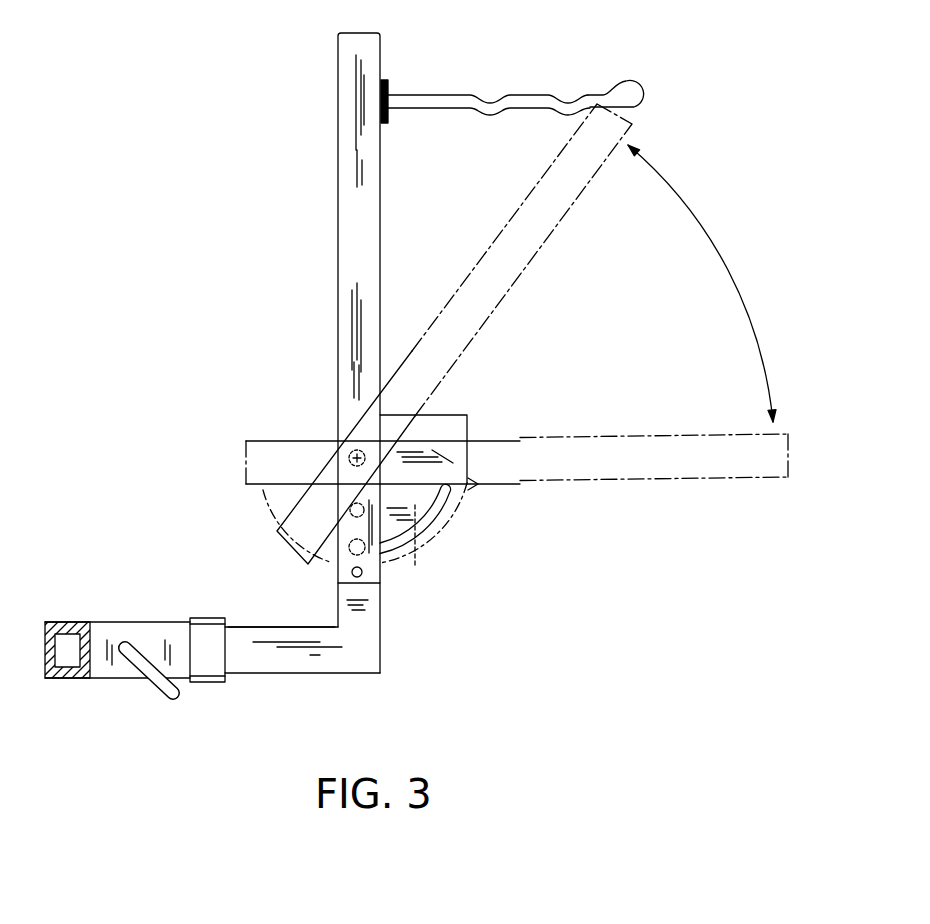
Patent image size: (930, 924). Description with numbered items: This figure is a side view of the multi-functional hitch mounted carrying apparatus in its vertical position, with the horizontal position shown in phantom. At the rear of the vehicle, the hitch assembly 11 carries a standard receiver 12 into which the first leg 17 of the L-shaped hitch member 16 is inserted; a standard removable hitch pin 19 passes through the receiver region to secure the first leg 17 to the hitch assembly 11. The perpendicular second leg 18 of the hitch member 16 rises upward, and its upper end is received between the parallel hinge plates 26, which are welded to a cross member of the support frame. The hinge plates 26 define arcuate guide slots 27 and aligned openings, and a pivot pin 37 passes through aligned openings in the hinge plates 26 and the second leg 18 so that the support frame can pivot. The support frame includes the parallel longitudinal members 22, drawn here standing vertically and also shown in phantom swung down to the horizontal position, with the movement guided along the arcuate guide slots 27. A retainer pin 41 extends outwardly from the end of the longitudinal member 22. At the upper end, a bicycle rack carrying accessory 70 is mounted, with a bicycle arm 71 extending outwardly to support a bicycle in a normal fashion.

The hitch assembly 11 is at (62, 678).
The standard receiver 12 is at (212, 685).
The hitch member 16 is at (317, 680).
The first leg 17 is at (240, 627).
The second leg 18 is at (381, 615).
The hitch pin 19 is at (148, 690).
The longitudinal members 22 is at (338, 222).
The hinge plates 26 is at (469, 418).
The arcuate guide slots 27 is at (437, 522).
The pivot pin 37 is at (354, 440).
The retainer pins 41 is at (350, 574).
The bicycle rack carrying accessory 70 is at (573, 103).
The bicycle arms 71 is at (607, 97).